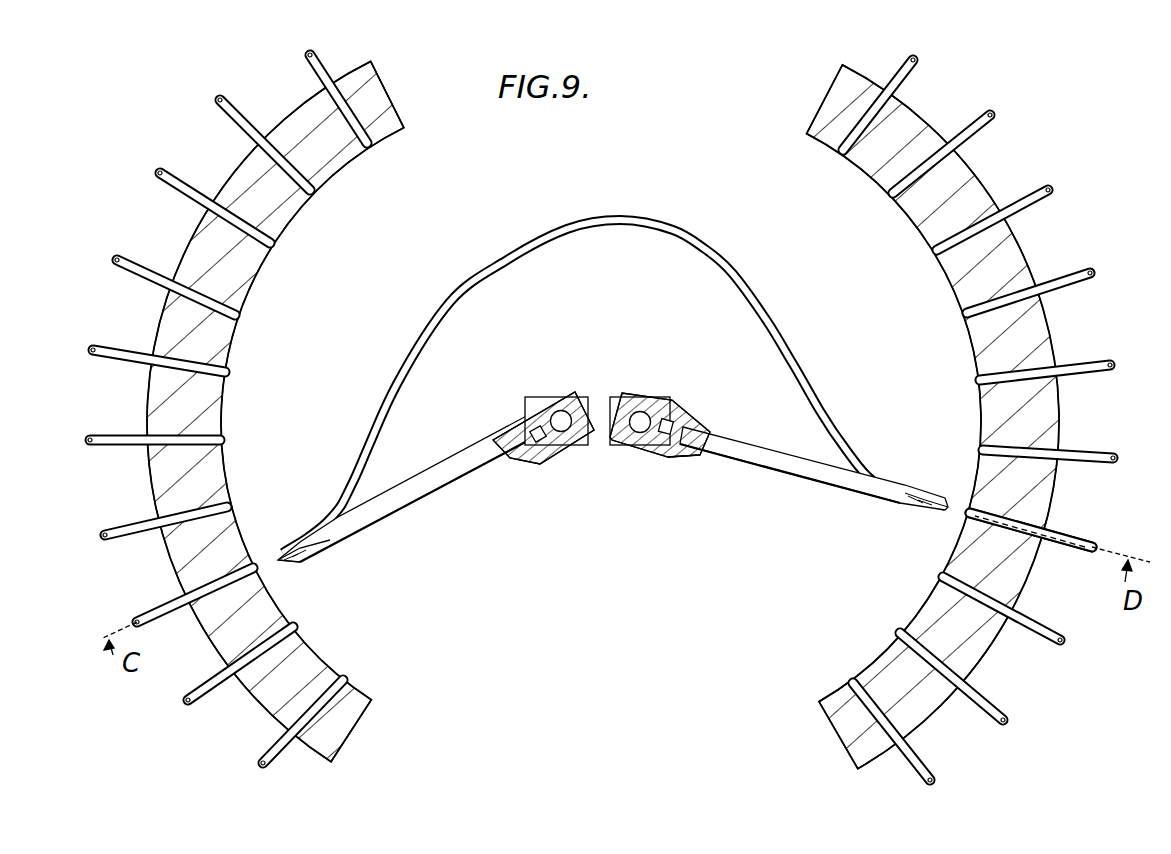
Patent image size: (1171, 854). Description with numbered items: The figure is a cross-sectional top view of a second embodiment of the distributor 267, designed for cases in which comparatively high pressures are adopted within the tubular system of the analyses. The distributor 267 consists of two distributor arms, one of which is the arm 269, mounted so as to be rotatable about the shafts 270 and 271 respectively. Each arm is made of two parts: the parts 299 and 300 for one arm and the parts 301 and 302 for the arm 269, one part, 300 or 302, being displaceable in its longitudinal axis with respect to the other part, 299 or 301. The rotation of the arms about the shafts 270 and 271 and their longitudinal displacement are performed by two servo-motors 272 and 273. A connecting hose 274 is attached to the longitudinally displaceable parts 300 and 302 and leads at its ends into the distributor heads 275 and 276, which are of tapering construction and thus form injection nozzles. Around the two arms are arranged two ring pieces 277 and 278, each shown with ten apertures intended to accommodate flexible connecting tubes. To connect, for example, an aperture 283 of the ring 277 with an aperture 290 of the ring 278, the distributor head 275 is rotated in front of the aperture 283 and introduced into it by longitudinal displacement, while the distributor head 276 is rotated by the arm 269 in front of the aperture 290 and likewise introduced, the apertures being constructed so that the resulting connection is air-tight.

The distributor 267 is at (604, 159).
The distributor arm 269 is at (795, 478).
The shaft 270 is at (558, 400).
The shaft 271 is at (641, 400).
The servo-motor 272 is at (590, 448).
The servo-motor 273 is at (628, 450).
The connecting hose 274 is at (446, 304).
The distributor head 275 is at (281, 563).
The distributor head 276 is at (920, 512).
The ring piece 277 is at (303, 216).
The ring piece 278 is at (897, 210).
The aperture 283 is at (278, 555).
The aperture 290 is at (963, 514).
The arm part 299 is at (513, 462).
The arm part 300 is at (472, 436).
The arm part 301 is at (684, 458).
The arm part 302 is at (722, 433).